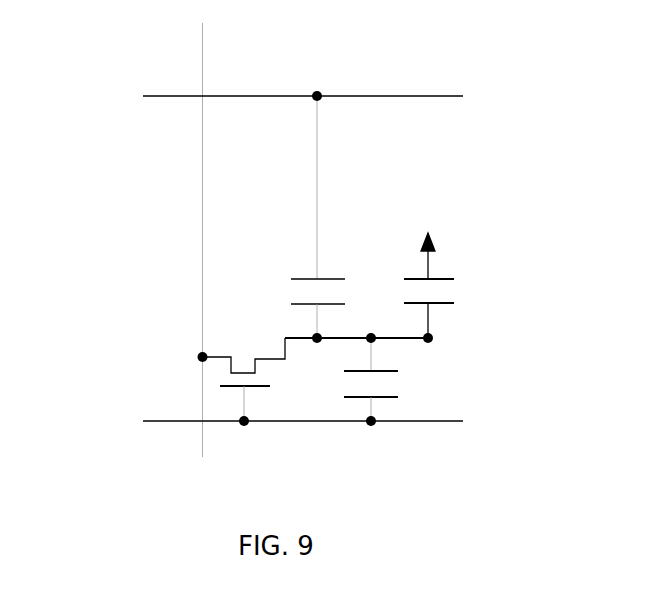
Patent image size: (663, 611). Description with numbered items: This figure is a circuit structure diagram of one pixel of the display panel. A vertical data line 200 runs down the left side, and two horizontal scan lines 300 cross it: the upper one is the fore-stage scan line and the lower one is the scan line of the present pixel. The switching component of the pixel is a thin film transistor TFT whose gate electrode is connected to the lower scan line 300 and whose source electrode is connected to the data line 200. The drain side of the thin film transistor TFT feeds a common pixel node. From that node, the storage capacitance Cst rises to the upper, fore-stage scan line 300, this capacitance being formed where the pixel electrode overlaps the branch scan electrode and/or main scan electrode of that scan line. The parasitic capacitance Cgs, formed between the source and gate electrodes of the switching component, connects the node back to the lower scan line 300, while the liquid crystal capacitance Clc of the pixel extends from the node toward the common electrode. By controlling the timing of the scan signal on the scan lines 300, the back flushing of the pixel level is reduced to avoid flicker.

The data line 200 is at (202, 52).
The scan line 300 is at (178, 94).
The storage capacitance Cst is at (296, 217).
The liquid crystal capacitance Clc is at (448, 285).
The parasitic capacitance Cgs is at (394, 379).
The thin film transistor TFT is at (252, 379).